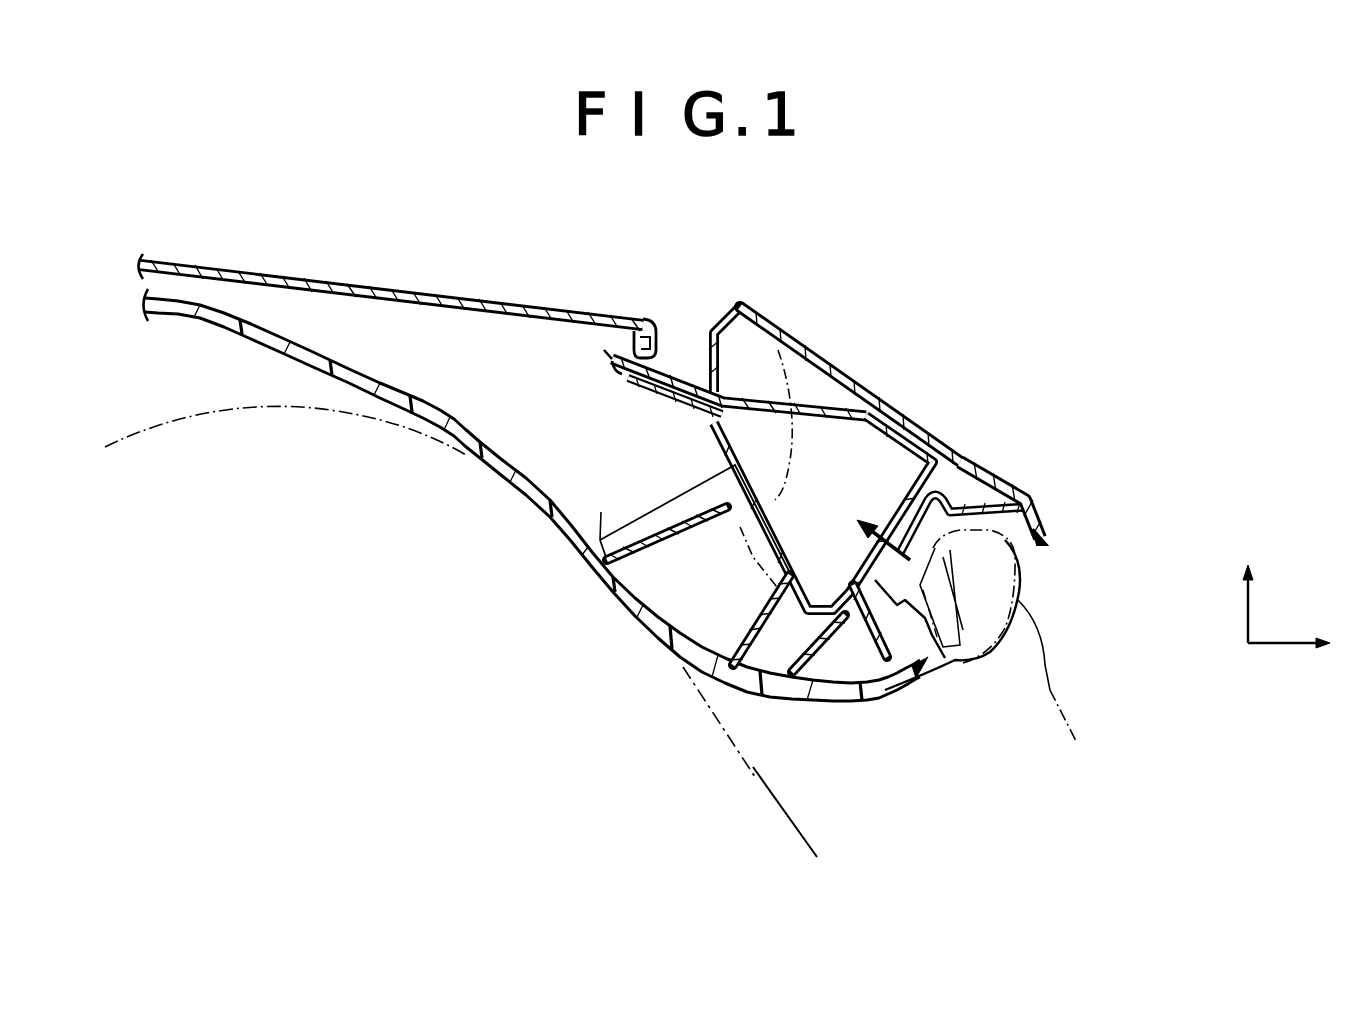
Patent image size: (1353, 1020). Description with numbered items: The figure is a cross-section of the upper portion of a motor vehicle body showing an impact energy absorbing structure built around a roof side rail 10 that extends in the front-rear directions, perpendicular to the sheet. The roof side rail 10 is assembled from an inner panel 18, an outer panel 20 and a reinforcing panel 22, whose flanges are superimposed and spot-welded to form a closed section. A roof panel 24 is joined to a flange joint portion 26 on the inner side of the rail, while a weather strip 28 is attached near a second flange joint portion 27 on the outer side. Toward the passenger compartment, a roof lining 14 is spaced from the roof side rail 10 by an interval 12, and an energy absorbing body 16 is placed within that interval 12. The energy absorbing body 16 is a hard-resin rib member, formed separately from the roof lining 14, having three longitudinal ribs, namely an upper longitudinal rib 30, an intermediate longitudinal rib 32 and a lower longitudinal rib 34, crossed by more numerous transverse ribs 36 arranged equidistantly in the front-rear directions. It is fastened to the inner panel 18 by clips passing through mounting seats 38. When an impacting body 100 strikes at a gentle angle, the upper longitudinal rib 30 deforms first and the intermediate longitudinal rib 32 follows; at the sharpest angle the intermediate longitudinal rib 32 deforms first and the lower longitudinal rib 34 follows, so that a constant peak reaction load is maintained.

The roof side rail 10 is at (803, 333).
The interval 12 is at (601, 515).
The roof lining 14 is at (632, 609).
The energy absorbing body 16 is at (760, 672).
The inner panel 18 is at (729, 447).
The outer panel 20 is at (927, 423).
The reinforcing panel 22 is at (821, 405).
The roof panel 24 is at (447, 292).
The flange joint portion 26 is at (683, 367).
The flange joint portion 27 is at (948, 660).
The weather strip 28 is at (1019, 655).
The upper longitudinal rib 30 is at (670, 527).
The intermediate longitudinal rib 32 is at (778, 660).
The lower longitudinal rib 34 is at (873, 640).
The transverse ribs 36 is at (667, 577).
The mounting seats 38 is at (781, 340).
The impacting body 100 is at (785, 813).